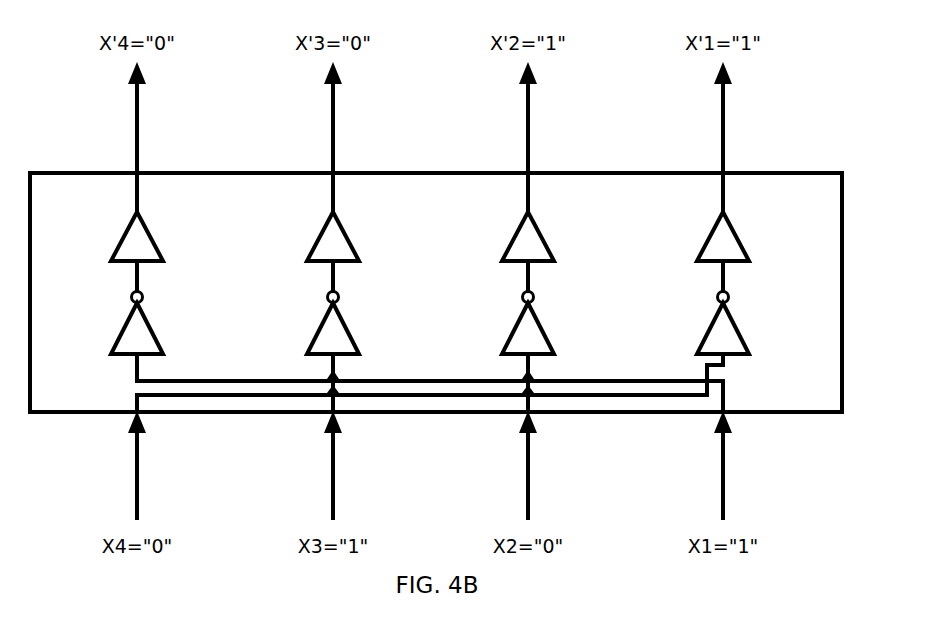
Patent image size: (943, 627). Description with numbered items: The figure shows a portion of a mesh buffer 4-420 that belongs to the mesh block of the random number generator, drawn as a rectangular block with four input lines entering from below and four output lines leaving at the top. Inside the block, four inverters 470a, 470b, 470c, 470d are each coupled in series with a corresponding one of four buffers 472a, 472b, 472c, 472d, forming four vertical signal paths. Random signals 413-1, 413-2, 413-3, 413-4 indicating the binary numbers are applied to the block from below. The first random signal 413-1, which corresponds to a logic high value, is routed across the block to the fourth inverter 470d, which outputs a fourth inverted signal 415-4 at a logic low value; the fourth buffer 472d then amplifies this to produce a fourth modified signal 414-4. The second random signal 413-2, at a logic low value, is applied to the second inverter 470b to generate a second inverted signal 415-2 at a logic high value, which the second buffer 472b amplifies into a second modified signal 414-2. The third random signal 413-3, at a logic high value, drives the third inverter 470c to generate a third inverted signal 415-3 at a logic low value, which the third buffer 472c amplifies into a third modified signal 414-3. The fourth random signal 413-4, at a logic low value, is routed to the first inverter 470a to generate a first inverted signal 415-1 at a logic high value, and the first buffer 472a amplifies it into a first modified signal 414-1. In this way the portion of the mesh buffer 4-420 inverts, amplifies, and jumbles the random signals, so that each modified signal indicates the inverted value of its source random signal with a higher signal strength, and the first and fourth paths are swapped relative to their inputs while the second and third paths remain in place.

The mesh buffer 4-420 is at (800, 413).
The fourth modified signal 414-4 is at (139, 120).
The third modified signal 414-3 is at (335, 120).
The second modified signal 414-2 is at (530, 120).
The first modified signal 414-1 is at (725, 120).
The fourth buffer 472d is at (155, 240).
The third buffer 472c is at (351, 240).
The second buffer 472b is at (546, 240).
The first buffer 472a is at (741, 240).
The fourth inverted signal 415-4 is at (141, 275).
The third inverted signal 415-3 is at (337, 275).
The second inverted signal 415-2 is at (532, 275).
The first inverted signal 415-1 is at (727, 275).
The fourth inverter 470d is at (155, 335).
The third inverter 470c is at (351, 335).
The second inverter 470b is at (546, 335).
The first inverter 470a is at (741, 335).
The fourth random signal 413-4 is at (140, 452).
The third random signal 413-3 is at (336, 452).
The second random signal 413-2 is at (531, 452).
The first random signal 413-1 is at (726, 452).